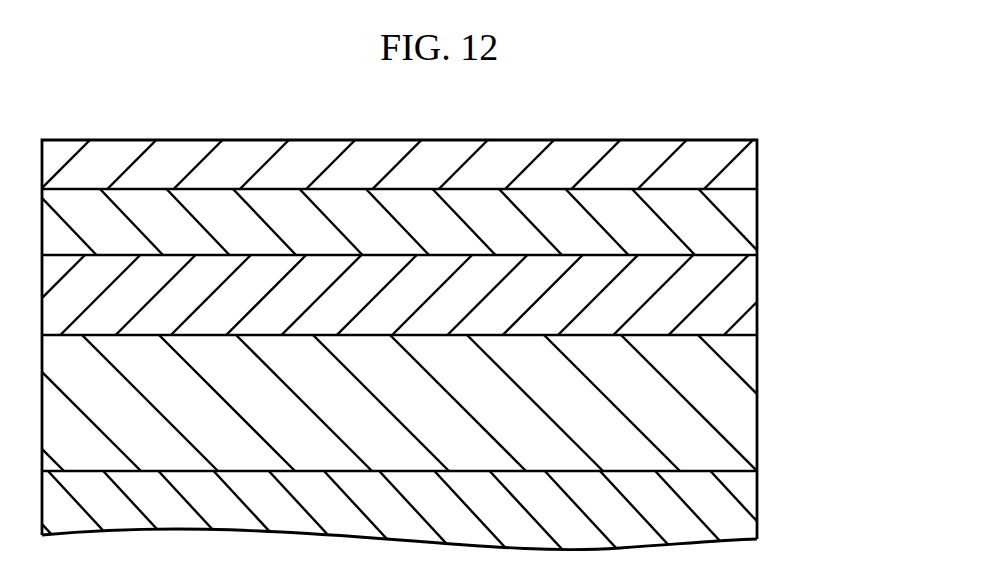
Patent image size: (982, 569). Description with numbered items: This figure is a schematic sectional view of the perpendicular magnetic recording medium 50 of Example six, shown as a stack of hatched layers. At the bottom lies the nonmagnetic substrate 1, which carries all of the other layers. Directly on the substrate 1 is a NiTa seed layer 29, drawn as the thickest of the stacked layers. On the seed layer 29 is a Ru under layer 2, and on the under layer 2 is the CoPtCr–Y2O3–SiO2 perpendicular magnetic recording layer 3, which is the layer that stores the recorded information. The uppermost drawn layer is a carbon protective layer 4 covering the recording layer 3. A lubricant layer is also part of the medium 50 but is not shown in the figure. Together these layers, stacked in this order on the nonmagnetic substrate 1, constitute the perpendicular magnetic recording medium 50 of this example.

The perpendicular magnetic recording medium 50 is at (690, 138).
The carbon protective layer 4 is at (748, 170).
The perpendicular magnetic recording layer 3 is at (747, 220).
The under layer 2 is at (745, 290).
The seed layer 29 is at (748, 415).
The nonmagnetic substrate 1 is at (747, 502).